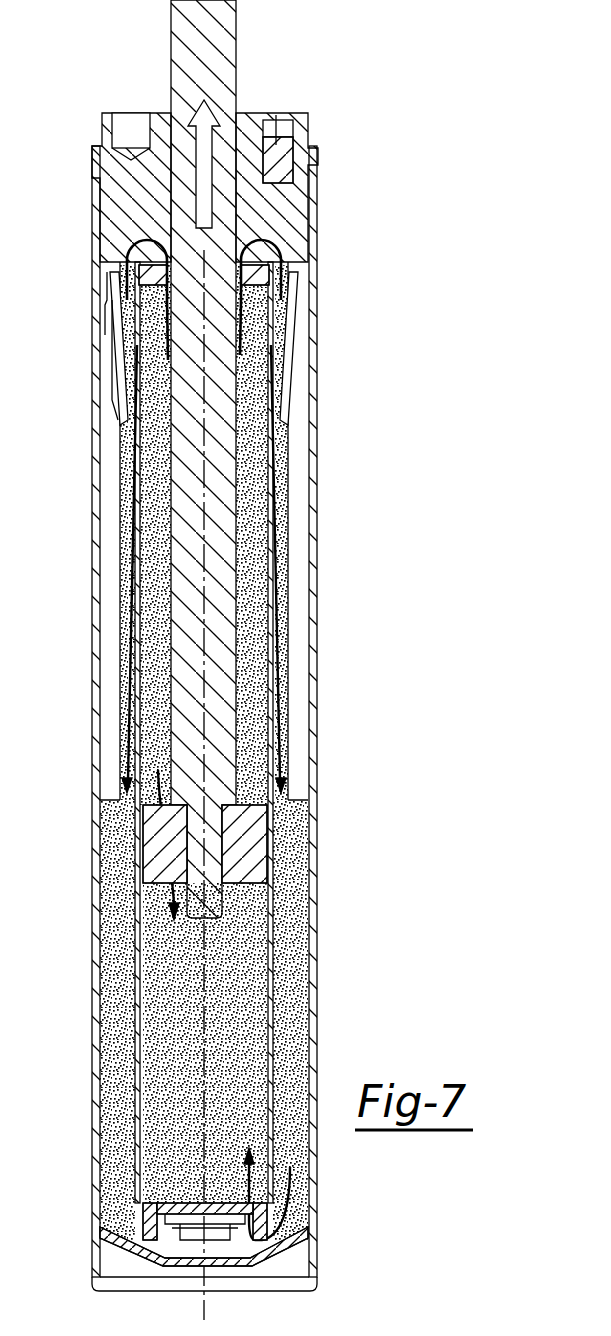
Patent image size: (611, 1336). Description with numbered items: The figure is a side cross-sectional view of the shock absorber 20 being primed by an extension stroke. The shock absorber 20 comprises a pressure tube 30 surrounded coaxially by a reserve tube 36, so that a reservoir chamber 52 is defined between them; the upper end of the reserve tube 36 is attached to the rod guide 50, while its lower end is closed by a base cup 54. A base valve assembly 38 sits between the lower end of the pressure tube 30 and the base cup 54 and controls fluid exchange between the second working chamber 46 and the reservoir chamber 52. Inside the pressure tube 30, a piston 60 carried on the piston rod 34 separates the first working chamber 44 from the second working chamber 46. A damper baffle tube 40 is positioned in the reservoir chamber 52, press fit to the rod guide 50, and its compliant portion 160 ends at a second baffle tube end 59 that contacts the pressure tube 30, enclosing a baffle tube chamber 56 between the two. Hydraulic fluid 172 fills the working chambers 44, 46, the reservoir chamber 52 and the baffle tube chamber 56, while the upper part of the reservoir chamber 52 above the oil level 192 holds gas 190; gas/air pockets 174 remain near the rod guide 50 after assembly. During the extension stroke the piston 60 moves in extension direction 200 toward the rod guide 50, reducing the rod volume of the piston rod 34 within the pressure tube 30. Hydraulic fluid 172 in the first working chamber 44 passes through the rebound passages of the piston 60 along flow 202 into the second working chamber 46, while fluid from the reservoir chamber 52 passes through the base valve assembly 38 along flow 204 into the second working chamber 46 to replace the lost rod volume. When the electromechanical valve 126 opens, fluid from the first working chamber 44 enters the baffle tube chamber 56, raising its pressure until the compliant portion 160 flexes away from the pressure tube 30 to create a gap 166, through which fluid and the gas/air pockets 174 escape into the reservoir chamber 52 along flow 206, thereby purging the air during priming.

The shock absorber 20 is at (388, 407).
The pressure tube 30 is at (140, 1000).
The piston rod 34 is at (228, 23).
The reserve tube 36 is at (97, 453).
The base valve assembly 38 is at (228, 1255).
The damper baffle tube 40 is at (118, 333).
The first working chamber 44 is at (255, 583).
The second working chamber 46 is at (178, 1146).
The rod guide 50 is at (120, 168).
The reservoir chamber 52 is at (297, 652).
The base cup 54 is at (278, 1263).
The baffle tube chamber 56 is at (127, 275).
The second baffle tube end 59 is at (283, 437).
The piston 60 is at (150, 846).
The electromechanical valve 126 is at (290, 183).
The compliant portion 160 is at (120, 402).
The gap 166 is at (292, 462).
The hydraulic fluid 172 is at (240, 985).
The gas/air pockets 174 is at (283, 333).
The gas 190 is at (113, 583).
The oil level 192 is at (298, 795).
The extension direction 200 is at (210, 113).
The flow 202 is at (170, 892).
The flow 204 is at (285, 1199).
The flow 206 is at (130, 685).